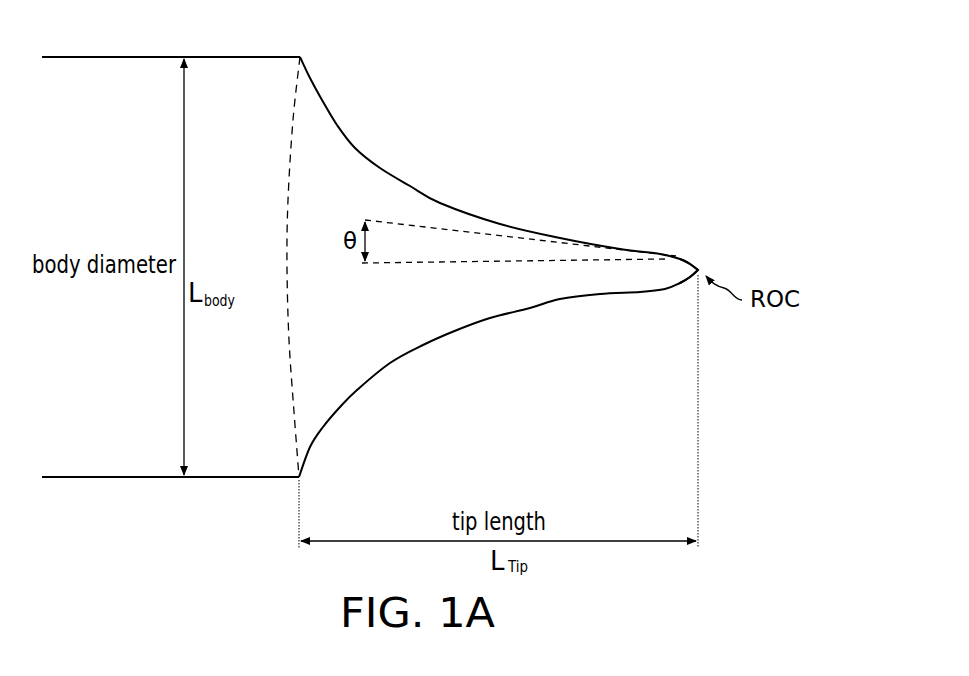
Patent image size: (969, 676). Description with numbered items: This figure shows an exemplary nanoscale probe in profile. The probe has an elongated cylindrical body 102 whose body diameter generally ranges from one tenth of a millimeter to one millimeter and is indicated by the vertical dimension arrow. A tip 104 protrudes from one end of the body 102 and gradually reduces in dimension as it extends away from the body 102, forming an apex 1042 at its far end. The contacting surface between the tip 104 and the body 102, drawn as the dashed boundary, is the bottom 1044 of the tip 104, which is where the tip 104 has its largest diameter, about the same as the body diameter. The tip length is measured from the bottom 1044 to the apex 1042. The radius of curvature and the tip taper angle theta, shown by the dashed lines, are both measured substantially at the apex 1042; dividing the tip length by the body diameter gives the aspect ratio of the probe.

The body 102 is at (247, 70).
The tip 104 is at (343, 155).
The apex 1042 is at (677, 255).
The bottom 1044 is at (292, 412).